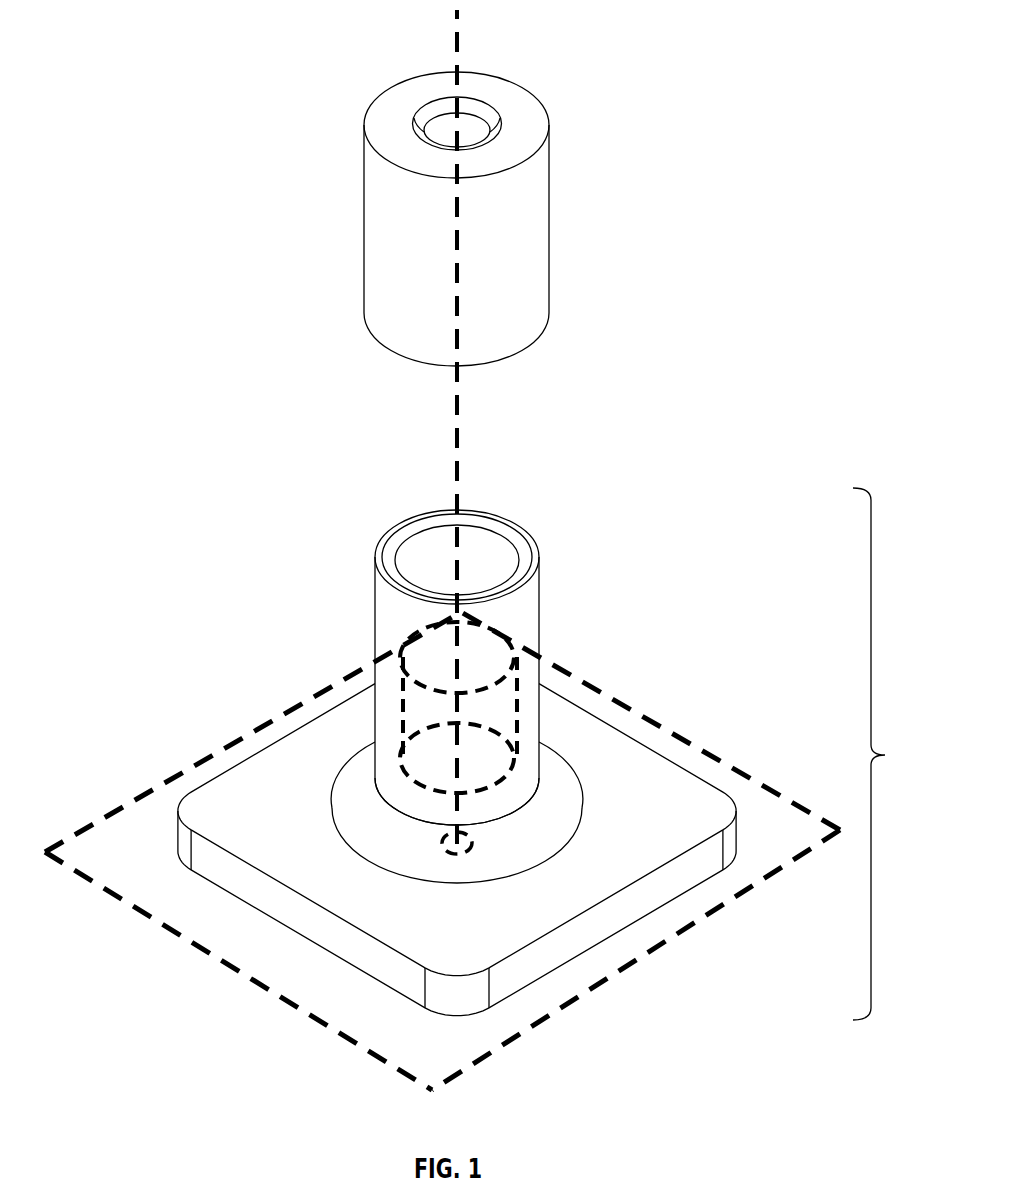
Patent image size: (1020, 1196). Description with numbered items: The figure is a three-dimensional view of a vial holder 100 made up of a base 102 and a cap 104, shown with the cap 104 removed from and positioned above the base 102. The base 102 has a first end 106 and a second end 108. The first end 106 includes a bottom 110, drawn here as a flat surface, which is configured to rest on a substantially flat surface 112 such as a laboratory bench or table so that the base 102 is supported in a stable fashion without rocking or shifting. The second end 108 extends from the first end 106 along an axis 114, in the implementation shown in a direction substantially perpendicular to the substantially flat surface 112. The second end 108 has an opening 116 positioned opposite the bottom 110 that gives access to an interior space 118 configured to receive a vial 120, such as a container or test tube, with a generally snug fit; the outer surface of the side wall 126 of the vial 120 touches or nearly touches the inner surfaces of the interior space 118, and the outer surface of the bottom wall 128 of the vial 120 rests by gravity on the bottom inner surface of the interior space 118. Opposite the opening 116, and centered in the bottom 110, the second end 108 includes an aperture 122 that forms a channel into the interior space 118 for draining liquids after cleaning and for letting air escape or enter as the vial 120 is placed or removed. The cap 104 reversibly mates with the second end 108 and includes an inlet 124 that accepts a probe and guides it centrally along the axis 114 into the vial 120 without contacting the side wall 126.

The holder 100 is at (765, 210).
The base 102 is at (908, 754).
The cap 104 is at (372, 287).
The first end 106 is at (186, 806).
The second end 108 is at (375, 648).
The bottom 110 is at (360, 990).
The substantially flat surface 112 is at (277, 957).
The axis 114 is at (455, 463).
The opening 116 is at (497, 533).
The interior space 118 is at (440, 542).
The vial 120 is at (517, 665).
The aperture 122 is at (468, 858).
The inlet 124 is at (504, 110).
The side wall 126 is at (517, 733).
The bottom wall 128 is at (495, 802).